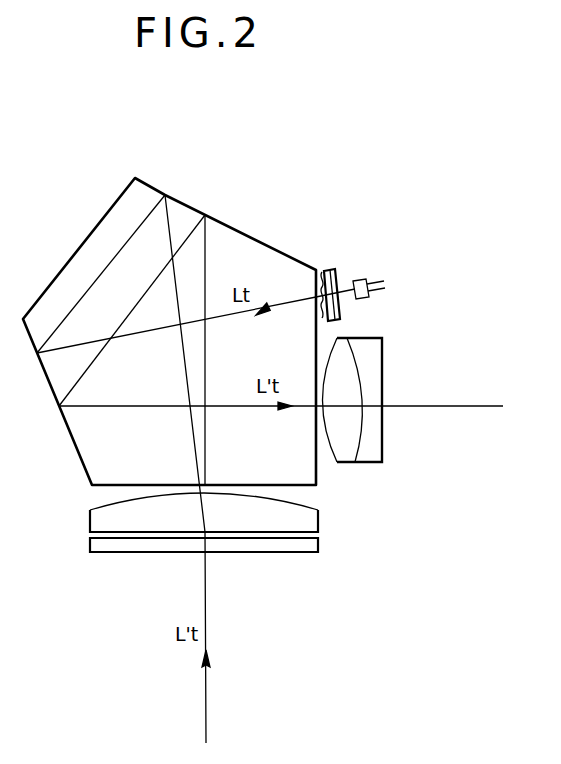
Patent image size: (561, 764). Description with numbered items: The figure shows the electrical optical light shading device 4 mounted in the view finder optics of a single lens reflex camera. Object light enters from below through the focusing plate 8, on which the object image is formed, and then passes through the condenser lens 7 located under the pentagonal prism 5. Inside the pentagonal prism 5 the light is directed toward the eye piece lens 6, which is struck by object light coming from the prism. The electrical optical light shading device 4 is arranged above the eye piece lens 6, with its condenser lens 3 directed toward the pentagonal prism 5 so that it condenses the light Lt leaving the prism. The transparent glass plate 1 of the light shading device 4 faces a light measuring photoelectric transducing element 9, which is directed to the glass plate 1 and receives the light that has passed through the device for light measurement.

The glass plate 1 is at (339, 270).
The condenser lens 3 is at (321, 270).
The electrical optical light shading device 4 is at (345, 275).
The pentagonal prism 5 is at (235, 240).
The eye piece lens 6 is at (350, 437).
The condenser lens 7 is at (313, 521).
The focusing plate 8 is at (312, 548).
The light measuring photoelectric transducing element 9 is at (366, 296).